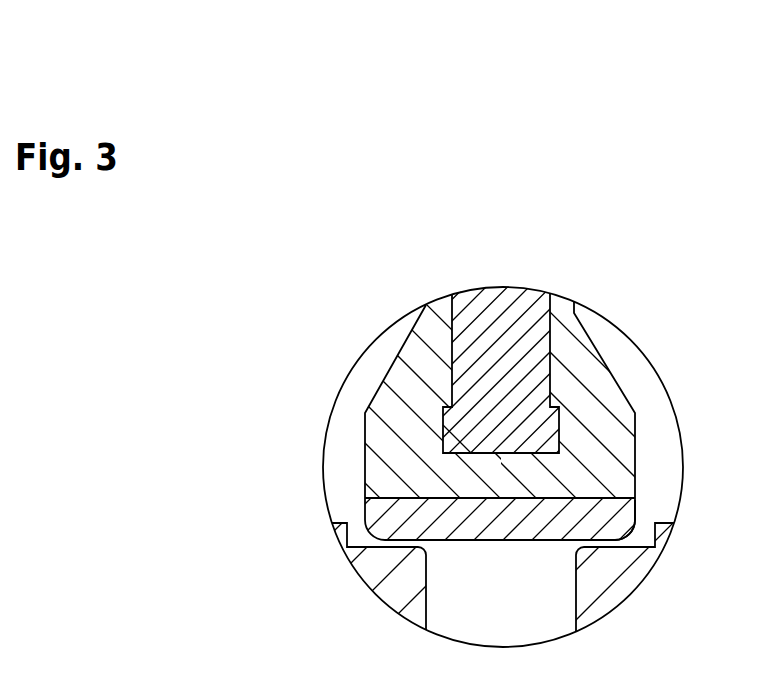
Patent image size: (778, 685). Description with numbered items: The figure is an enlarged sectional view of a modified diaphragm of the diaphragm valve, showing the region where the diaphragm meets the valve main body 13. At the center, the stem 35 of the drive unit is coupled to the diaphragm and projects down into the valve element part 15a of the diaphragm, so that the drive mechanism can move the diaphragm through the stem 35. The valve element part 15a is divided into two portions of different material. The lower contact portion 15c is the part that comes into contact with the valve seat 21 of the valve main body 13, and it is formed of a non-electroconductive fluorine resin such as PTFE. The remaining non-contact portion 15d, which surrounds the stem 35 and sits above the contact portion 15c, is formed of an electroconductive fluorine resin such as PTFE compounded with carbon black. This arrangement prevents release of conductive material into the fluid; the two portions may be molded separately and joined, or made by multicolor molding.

The valve main body 13 is at (607, 577).
The valve element part 15a is at (455, 405).
The contact portion 15c is at (383, 511).
The non-contact portion 15d is at (383, 434).
The valve seat 21 is at (624, 521).
The stem 35 is at (537, 355).